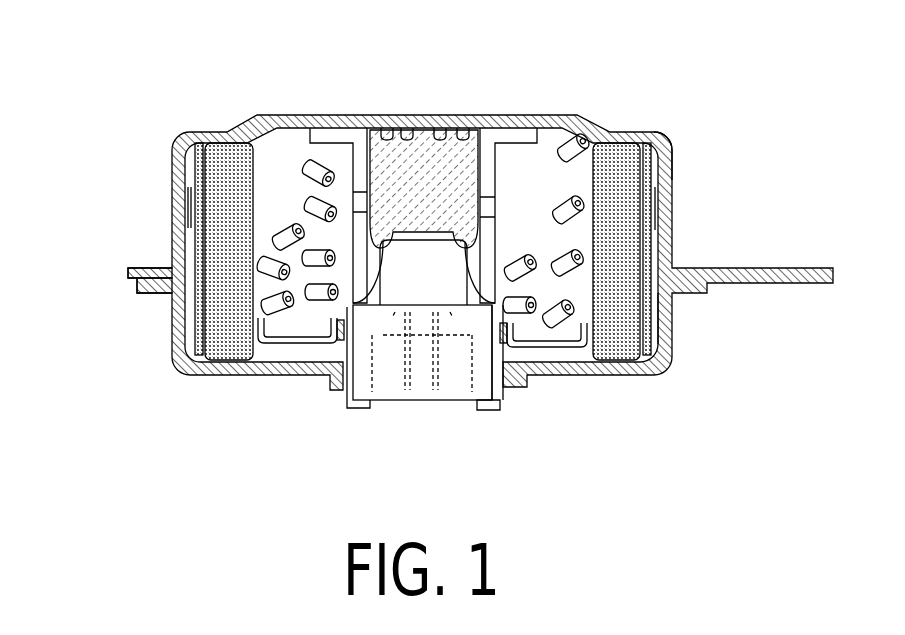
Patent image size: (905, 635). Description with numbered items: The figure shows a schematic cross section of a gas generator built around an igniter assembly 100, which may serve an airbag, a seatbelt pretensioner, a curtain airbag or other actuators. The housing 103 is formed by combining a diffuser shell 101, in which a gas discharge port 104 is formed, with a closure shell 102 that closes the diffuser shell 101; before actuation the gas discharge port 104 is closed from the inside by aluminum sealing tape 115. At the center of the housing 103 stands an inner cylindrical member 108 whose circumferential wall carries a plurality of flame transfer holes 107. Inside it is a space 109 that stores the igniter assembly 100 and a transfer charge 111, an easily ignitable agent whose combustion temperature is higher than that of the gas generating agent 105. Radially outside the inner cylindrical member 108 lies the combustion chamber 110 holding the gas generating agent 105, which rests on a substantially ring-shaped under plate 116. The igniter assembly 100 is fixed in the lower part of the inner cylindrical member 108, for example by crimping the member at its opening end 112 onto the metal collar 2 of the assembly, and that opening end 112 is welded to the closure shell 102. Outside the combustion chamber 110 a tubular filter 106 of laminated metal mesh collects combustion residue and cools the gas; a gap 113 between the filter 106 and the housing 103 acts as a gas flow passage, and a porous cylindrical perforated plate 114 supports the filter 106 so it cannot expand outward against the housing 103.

The metal collar 2 is at (485, 390).
The igniter assembly 100 is at (448, 287).
The diffuser shell 101 is at (173, 240).
The closure shell 102 is at (173, 308).
The housing 103 is at (77, 223).
The gas discharge port 104 is at (668, 207).
The gas generating agent 105 is at (305, 198).
The filter 106 is at (230, 158).
The flame transfer holes 107 is at (497, 203).
The inner cylindrical member 108 is at (497, 157).
The space 109 is at (388, 150).
The combustion chamber 110 is at (289, 140).
The transfer charge 111 is at (445, 200).
The opening end 112 is at (353, 410).
The gap 113 is at (672, 170).
The perforated plate 114 is at (658, 317).
The aluminum sealing tape 115 is at (173, 213).
The under plate 116 is at (573, 345).